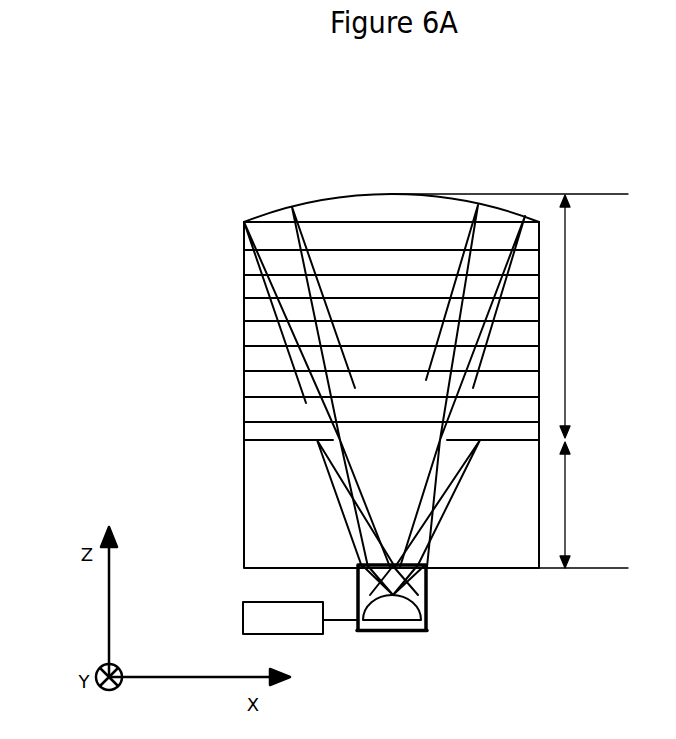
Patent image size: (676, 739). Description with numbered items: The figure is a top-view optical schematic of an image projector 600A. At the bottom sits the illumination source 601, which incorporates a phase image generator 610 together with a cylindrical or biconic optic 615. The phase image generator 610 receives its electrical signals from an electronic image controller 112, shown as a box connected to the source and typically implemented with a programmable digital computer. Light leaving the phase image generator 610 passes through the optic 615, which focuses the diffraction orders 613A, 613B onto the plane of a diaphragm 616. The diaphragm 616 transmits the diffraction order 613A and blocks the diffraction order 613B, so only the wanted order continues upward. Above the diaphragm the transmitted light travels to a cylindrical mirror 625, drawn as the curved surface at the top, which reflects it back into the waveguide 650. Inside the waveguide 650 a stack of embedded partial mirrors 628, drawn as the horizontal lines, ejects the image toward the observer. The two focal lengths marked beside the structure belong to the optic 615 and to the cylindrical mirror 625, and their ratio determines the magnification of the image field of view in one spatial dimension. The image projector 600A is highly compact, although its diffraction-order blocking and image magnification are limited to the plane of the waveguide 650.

The image projector 600A is at (297, 145).
The cylindrical mirror 625 is at (403, 194).
The embedded partial mirrors 628 is at (247, 419).
The diaphragm 616 is at (290, 437).
The diffraction order 613A is at (437, 457).
The diffraction order 613B is at (448, 526).
The waveguide 650 is at (245, 497).
The cylindrical or biconic optic 615 is at (407, 610).
The phase image generator 610 is at (413, 622).
The illumination source 601 is at (392, 637).
The electronic image controller 112 is at (266, 628).